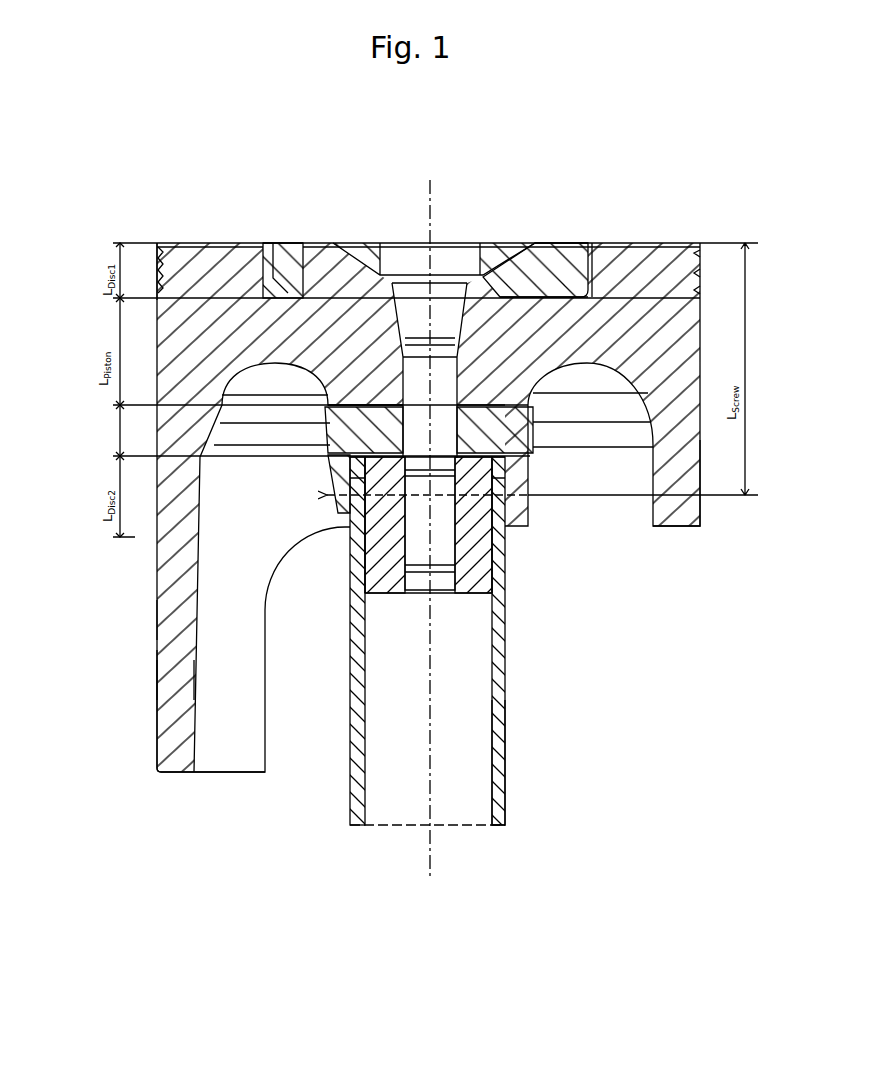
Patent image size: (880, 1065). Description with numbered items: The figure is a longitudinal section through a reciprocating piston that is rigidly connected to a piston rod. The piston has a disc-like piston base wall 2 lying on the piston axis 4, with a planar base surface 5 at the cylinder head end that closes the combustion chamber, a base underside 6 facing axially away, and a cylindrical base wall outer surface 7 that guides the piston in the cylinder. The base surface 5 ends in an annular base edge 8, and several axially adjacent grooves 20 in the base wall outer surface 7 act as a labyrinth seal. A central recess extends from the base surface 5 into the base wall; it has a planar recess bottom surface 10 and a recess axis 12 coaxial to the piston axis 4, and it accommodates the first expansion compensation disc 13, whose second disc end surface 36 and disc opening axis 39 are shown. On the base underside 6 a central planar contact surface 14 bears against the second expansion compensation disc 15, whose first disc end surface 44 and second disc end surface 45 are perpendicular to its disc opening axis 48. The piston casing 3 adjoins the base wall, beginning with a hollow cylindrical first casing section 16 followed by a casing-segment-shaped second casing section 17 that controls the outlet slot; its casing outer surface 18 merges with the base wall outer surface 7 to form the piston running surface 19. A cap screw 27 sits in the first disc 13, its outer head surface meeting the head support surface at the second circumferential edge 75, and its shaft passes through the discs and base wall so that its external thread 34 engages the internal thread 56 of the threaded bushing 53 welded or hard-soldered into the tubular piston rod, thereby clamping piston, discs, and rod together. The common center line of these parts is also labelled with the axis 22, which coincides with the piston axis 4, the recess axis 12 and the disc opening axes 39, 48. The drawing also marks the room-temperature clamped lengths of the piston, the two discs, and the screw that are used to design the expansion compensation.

The piston base wall 2 is at (613, 297).
The piston casing 3 is at (672, 475).
The piston axis 4 is at (530, 545).
The base surface 5 is at (228, 241).
The base underside 6 is at (587, 365).
The base wall outer surface 7 is at (703, 318).
The base edge 8 is at (160, 243).
The recess bottom surface 10 is at (300, 296).
The recess axis 12 is at (530, 545).
The first expansion compensation disc 13 is at (552, 267).
The contact surface 14 is at (505, 408).
The second expansion compensation disc 15 is at (523, 412).
The first casing section 16 is at (672, 505).
The second casing section 17 is at (165, 693).
The casing outer surface 18 is at (158, 677).
The piston running surface 19 is at (158, 622).
The grooves 20 is at (703, 290).
The bore axis 22 is at (530, 545).
The cap screw 27 is at (455, 262).
The external thread 34 is at (278, 531).
The second disc end surface 36 is at (510, 303).
The disc opening axis 39 is at (530, 545).
The first disc end surface 44 is at (352, 405).
The second disc end surface 45 is at (507, 762).
The disc opening axis 48 is at (430, 877).
The threaded bushing 53 is at (403, 563).
The internal thread 56 is at (403, 563).
The second circumferential edge 75 is at (533, 240).